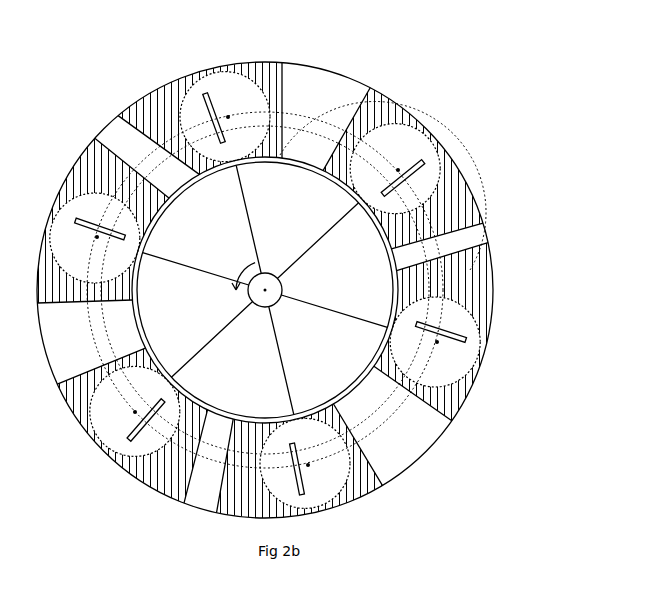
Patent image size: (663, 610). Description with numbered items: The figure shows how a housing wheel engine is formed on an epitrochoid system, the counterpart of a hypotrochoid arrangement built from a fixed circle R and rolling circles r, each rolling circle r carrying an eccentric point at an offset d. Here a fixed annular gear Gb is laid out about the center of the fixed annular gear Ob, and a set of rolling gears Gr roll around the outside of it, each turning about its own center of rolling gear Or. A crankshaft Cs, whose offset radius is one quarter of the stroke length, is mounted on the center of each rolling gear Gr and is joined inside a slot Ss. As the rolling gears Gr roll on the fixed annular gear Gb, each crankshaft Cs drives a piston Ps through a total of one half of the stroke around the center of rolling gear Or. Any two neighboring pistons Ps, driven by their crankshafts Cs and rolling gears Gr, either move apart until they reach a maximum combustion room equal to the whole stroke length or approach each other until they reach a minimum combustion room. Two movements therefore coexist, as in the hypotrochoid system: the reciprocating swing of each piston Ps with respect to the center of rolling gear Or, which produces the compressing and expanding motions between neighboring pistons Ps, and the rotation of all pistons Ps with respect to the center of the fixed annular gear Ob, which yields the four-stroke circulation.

The fixed annular gear Gb is at (370, 88).
The rolling gear Gr is at (400, 108).
The crankshaft Cs is at (427, 135).
The slot Ss is at (430, 172).
The piston Ps is at (455, 212).
The center of the fixed annular gear Ob is at (269, 290).
The center of rolling gear Or is at (447, 350).
The fixed circle R is at (308, 154).
The rolling circle r is at (265, 134).
The offset d is at (316, 144).